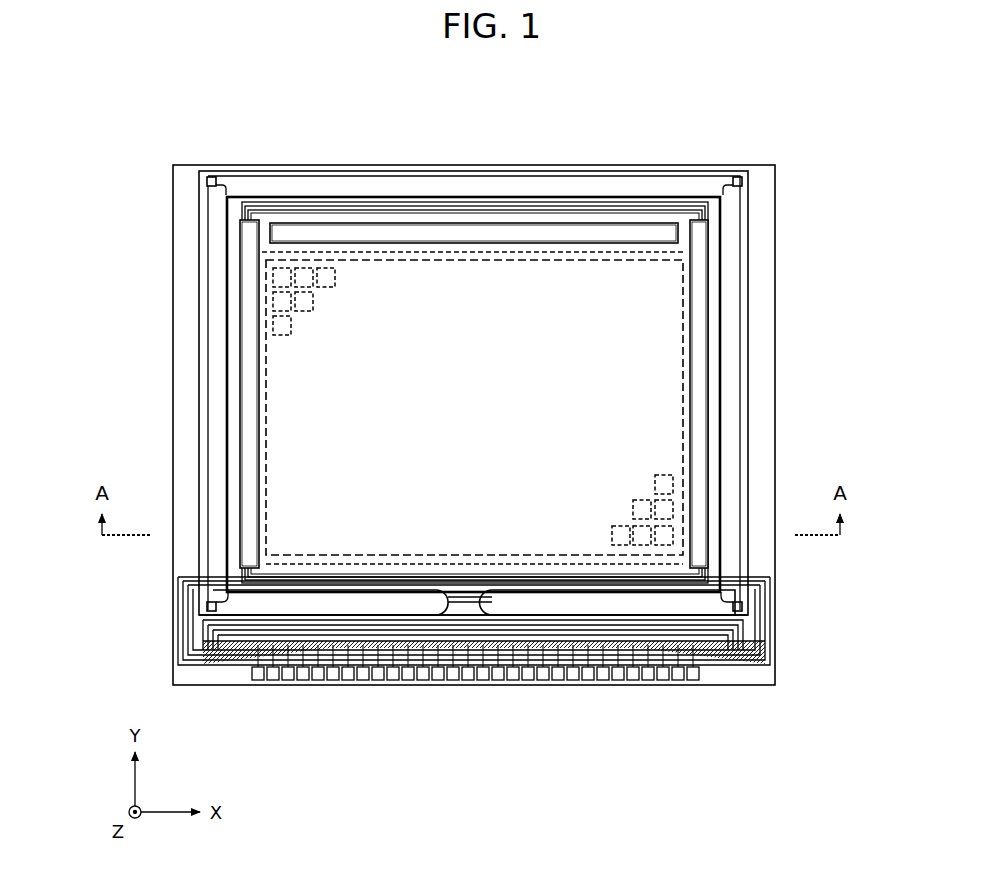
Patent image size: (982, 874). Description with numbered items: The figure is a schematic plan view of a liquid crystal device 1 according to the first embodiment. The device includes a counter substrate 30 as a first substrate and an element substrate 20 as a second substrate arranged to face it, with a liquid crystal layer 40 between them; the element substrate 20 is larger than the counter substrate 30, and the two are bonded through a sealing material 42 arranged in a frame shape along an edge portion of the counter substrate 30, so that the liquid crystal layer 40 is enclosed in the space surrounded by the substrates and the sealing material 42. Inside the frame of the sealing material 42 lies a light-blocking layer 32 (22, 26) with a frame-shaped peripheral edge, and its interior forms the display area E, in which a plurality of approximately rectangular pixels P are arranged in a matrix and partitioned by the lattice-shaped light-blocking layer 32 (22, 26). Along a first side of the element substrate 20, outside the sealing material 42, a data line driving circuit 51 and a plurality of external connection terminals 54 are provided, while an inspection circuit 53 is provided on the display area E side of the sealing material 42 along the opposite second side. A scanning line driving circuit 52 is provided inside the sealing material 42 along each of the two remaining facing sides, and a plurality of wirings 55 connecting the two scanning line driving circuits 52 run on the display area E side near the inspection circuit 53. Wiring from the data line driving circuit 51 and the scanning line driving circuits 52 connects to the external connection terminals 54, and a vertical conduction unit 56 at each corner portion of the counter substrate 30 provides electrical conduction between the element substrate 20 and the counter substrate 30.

The liquid crystal device 1 is at (790, 94).
The element substrate 20 is at (290, 165).
The counter substrate 30 is at (388, 172).
The wirings 55 is at (482, 205).
The inspection circuit 53 is at (560, 232).
The vertical conduction unit 56 is at (207, 182).
The liquid crystal layer 40 is at (663, 322).
The sealing material 42 is at (733, 362).
The scanning line driving circuit 52 is at (250, 370).
The display area E is at (672, 438).
The pixel P is at (293, 325).
The light-blocking layer 32 is at (472, 410).
The light-blocking layer 22 is at (472, 410).
The light-blocking layer 26 is at (348, 568).
The data line driving circuit 51 is at (243, 628).
The external connection terminals 54 is at (345, 682).